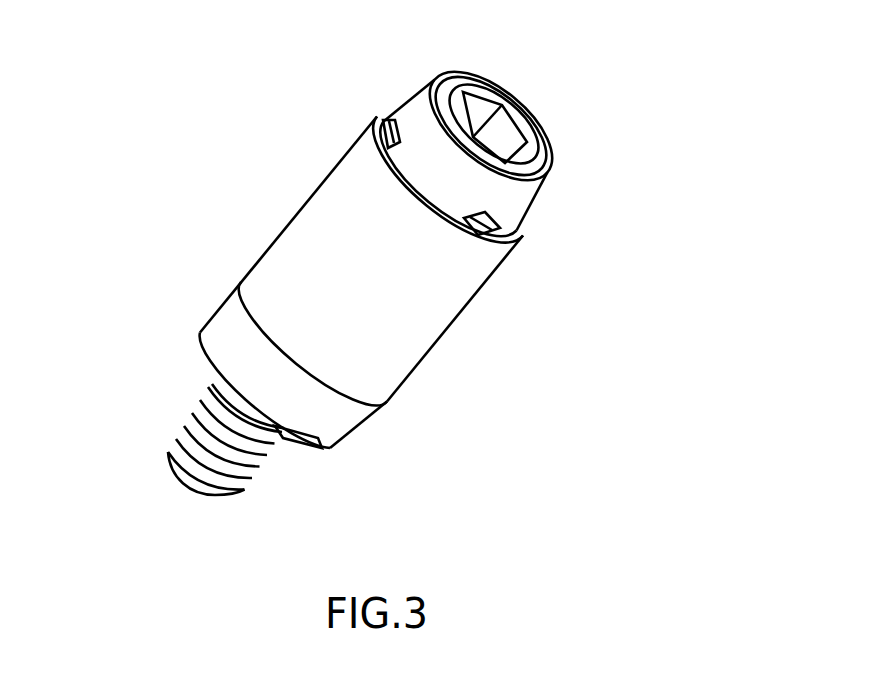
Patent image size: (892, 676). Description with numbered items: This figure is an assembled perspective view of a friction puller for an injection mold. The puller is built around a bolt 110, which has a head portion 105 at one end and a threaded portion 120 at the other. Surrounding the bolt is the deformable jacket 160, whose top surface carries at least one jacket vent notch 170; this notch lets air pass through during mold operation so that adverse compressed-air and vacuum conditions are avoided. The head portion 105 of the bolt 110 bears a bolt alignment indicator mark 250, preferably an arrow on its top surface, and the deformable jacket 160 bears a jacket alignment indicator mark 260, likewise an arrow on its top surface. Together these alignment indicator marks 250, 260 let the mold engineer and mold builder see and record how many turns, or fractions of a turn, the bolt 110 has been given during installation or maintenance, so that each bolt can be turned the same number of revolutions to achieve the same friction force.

The head portion 105 is at (493, 205).
The bolt 110 is at (413, 137).
The threaded portion 120 is at (208, 415).
The deformable jacket 160 is at (290, 273).
The jacket vent notch 170 is at (308, 441).
The bolt alignment indicator mark 250 is at (493, 155).
The jacket alignment indicator mark 260 is at (496, 232).